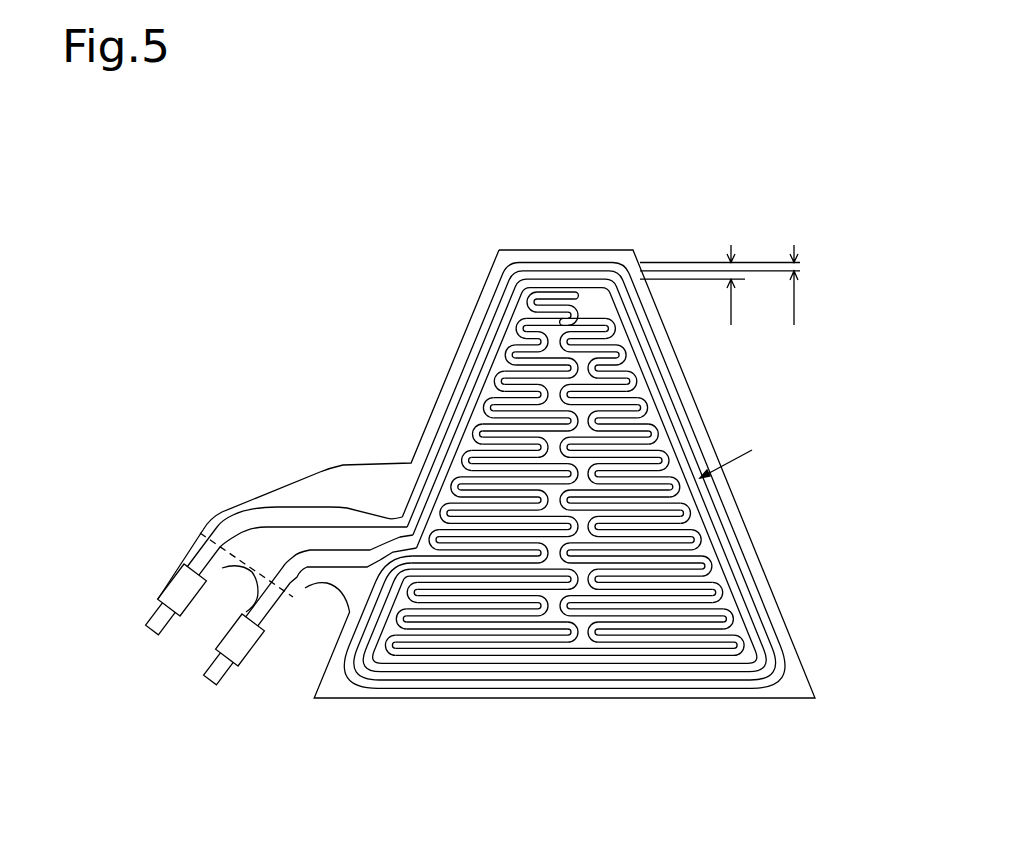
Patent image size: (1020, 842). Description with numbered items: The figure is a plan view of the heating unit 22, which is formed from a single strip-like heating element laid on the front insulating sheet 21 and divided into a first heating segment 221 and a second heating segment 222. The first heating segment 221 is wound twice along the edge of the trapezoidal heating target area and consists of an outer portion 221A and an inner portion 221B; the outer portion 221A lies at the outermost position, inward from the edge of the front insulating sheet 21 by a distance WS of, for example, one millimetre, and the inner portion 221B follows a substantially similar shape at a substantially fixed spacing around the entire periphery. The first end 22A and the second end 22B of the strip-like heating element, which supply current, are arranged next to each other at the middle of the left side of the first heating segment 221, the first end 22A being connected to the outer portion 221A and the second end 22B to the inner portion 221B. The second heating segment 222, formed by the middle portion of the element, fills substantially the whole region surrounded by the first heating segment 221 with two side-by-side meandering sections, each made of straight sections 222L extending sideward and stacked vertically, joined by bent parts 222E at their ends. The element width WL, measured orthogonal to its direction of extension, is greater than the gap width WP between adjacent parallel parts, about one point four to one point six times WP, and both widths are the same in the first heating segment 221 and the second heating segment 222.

The front insulating sheet 21 is at (807, 672).
The heating unit 22 is at (486, 453).
The first heating segment 221 is at (486, 476).
The outer portion 221A is at (471, 352).
The inner portion 221B is at (458, 403).
The second heating segment 222 is at (575, 472).
The bent parts 222E is at (583, 325).
The straight sections 222L is at (630, 372).
The first end 22A is at (146, 624).
The second end 22B is at (224, 684).
The width between parts of the strip-like heating element WP is at (720, 285).
The width of the strip-like heating element WL is at (808, 285).
The distance between edge of outer portion and edge of front insulating sheet WS is at (730, 450).